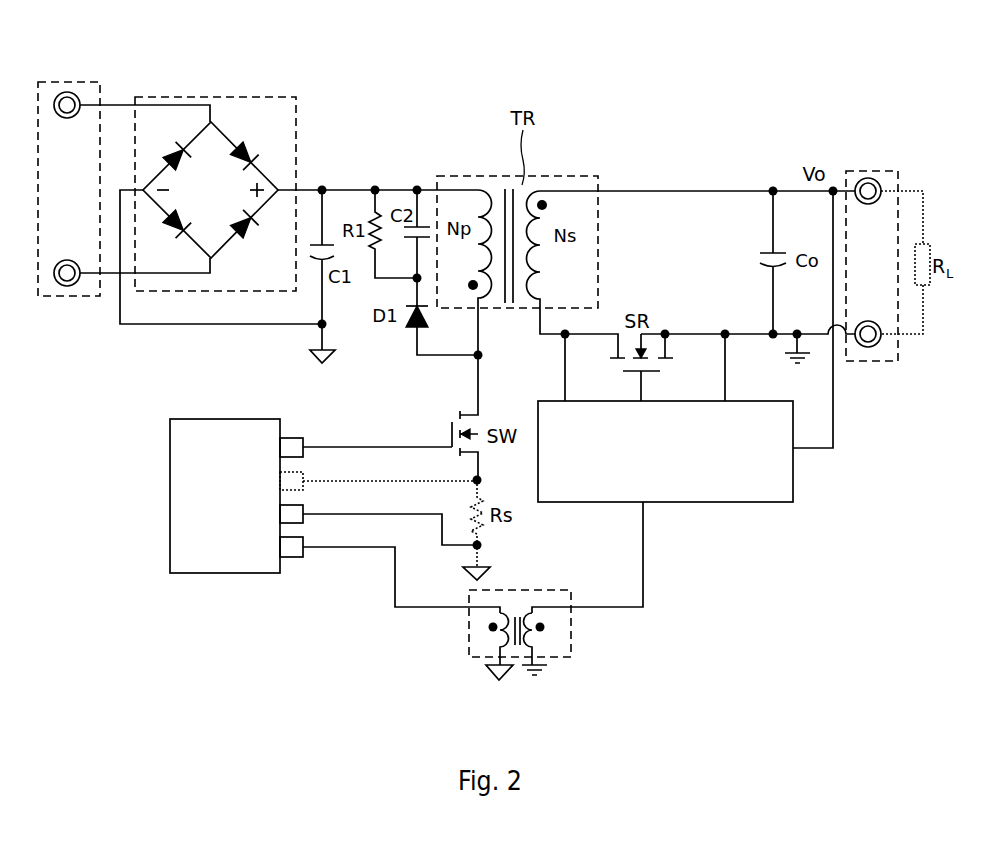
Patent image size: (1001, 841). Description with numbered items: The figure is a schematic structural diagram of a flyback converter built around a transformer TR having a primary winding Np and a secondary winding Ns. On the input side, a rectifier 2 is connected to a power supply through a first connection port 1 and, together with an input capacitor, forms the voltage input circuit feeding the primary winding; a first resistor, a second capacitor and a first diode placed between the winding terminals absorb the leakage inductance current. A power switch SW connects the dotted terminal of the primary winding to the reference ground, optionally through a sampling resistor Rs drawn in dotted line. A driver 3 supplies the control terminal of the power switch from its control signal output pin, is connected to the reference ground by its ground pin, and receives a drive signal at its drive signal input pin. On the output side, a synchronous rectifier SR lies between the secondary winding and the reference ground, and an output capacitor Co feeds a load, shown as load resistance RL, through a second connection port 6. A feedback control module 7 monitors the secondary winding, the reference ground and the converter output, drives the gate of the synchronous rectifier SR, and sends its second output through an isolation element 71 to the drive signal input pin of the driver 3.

The first connection port 1 is at (49, 90).
The rectifier 2 is at (244, 117).
The driver 3 is at (190, 443).
The second connection port 6 is at (853, 178).
The feedback control module 7 is at (658, 474).
The isolation element 71 is at (553, 600).